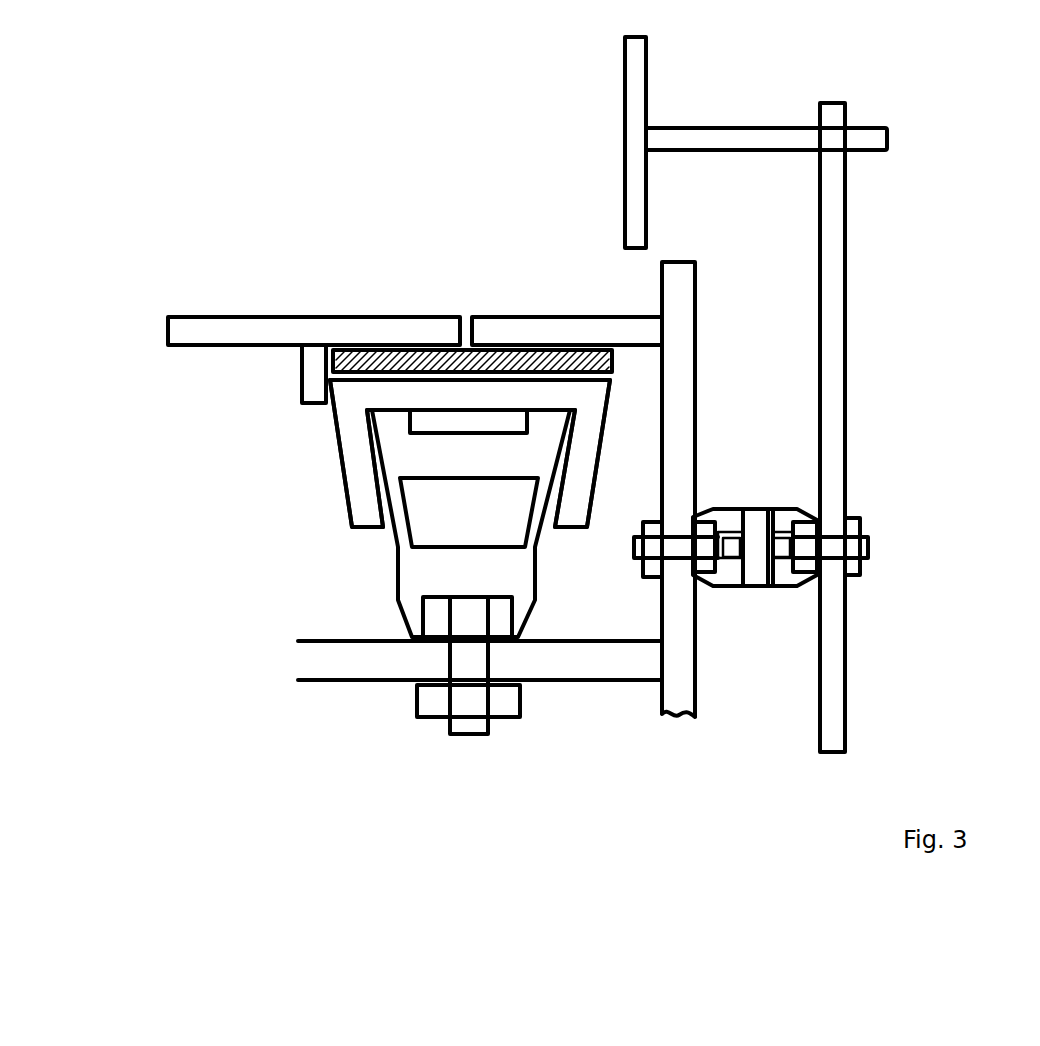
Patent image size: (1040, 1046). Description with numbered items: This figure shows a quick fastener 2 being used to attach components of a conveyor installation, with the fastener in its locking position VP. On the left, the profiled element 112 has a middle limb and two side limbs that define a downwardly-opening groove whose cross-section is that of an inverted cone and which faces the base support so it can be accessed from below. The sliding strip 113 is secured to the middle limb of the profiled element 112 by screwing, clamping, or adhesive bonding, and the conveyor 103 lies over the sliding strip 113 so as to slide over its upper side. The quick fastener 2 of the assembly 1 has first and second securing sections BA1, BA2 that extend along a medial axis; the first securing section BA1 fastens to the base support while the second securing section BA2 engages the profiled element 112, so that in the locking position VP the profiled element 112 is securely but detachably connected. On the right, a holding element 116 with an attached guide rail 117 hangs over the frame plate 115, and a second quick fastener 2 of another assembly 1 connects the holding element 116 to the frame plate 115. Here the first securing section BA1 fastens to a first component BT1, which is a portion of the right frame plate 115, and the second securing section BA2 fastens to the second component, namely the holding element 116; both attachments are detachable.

The conveyor 103 is at (284, 298).
The sliding strip 113 is at (402, 357).
The profiled element 112 is at (470, 356).
The first component BT1 is at (683, 308).
The second securing section BA2 is at (311, 468).
The first securing section BA1 is at (372, 705).
The assembly 1 is at (307, 536).
The quick fastener 2 is at (422, 585).
The locking position VP is at (506, 768).
The guide rail 117 is at (670, 99).
The holding element 116 is at (911, 427).
The frame plate 115 is at (734, 489).